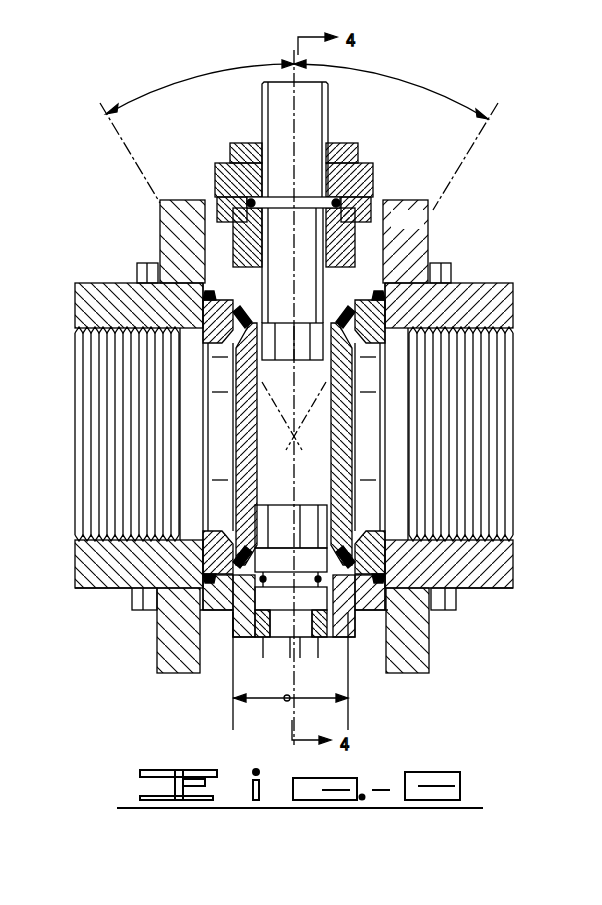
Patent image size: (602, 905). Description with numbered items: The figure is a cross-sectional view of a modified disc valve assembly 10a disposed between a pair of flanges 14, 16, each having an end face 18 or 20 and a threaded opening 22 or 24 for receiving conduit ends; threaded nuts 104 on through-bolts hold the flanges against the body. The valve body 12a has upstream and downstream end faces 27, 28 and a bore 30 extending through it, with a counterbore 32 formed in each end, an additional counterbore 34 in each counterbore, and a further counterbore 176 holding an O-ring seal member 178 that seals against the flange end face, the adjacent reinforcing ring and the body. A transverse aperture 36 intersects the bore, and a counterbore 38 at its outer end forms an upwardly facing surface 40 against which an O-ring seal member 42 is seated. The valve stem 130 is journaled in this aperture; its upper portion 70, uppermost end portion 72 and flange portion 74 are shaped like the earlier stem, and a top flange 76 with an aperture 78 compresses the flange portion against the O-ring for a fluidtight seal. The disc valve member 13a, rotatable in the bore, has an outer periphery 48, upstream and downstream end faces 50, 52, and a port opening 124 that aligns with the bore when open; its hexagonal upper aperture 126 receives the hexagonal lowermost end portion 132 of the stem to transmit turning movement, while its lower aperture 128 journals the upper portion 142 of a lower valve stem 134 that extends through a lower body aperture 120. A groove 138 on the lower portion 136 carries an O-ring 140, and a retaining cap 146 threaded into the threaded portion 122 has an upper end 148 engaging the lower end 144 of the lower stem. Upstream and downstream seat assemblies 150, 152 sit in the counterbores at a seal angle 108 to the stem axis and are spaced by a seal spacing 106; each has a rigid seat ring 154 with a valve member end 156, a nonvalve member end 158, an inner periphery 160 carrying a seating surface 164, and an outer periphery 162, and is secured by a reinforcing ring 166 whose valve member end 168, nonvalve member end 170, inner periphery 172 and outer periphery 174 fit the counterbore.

The modified disc valve assembly 10a is at (355, 137).
The valve body 12a is at (230, 626).
The disc valve member 13a is at (355, 400).
The flange 14 is at (176, 664).
The flange 16 is at (414, 665).
The end face 18 is at (205, 612).
The end face 20 is at (380, 672).
The threaded opening 22 is at (92, 328).
The threaded opening 24 is at (506, 536).
The upstream end face 27 is at (203, 600).
The downstream end face 28 is at (386, 614).
The bore 30 is at (250, 500).
The counterbore 32 is at (250, 480).
The counterbore 34 is at (215, 297).
The aperture 36 is at (262, 233).
The counterbore 38 is at (247, 203).
The upwardly facing surface 40 is at (342, 206).
The O-ring seal member 42 is at (252, 203).
The outer periphery 48 is at (362, 322).
The upstream end face 50 is at (236, 423).
The downstream end face 52 is at (355, 443).
The upper portion 70 is at (312, 240).
The uppermost end portion 72 is at (308, 102).
The flange portion 74 is at (310, 200).
The top flange 76 is at (233, 177).
The aperture 78 is at (262, 178).
The threaded nut 104 is at (137, 274).
The seal spacing 106 is at (285, 702).
The seal angle 108 is at (208, 72).
The aperture 120 is at (270, 640).
The threaded portion 122 is at (320, 643).
The port opening 124 is at (260, 440).
The upper aperture 126 is at (262, 352).
The lower aperture 128 is at (291, 567).
The valve stem 130 is at (362, 236).
The lowermost end portion 132 is at (320, 350).
The lower valve stem 134 is at (313, 598).
The lower portion 136 is at (360, 555).
The groove 138 is at (305, 598).
The O-ring 140 is at (257, 583).
The upper portion 142 is at (296, 520).
The lower end 144 is at (300, 650).
The retaining cap 146 is at (283, 650).
The upper end 148 is at (313, 640).
The upstream seat assembly 150 is at (236, 375).
The downstream seat assembly 152 is at (385, 367).
The seat ring 154 is at (262, 290).
The valve member end 156 is at (262, 308).
The nonvalve member end 158 is at (220, 322).
The inner periphery 160 is at (355, 500).
The outer periphery 162 is at (345, 303).
The seating surface 164 is at (205, 358).
The reinforcing ring 166 is at (262, 273).
The valve member end 168 is at (215, 556).
The nonvalve member end 170 is at (218, 538).
The inner periphery 172 is at (220, 513).
The outer periphery 174 is at (207, 590).
The counterbore 176 is at (205, 272).
The O-ring seal member 178 is at (206, 288).